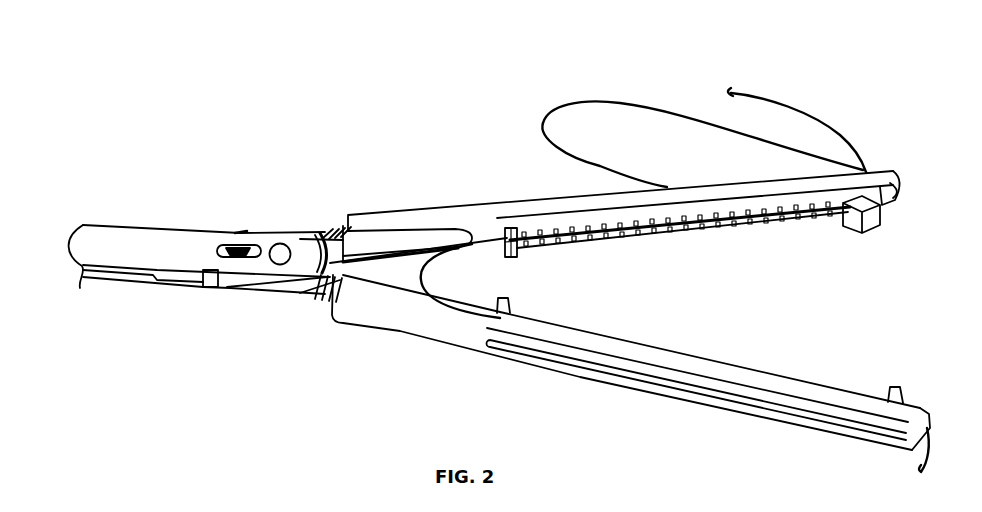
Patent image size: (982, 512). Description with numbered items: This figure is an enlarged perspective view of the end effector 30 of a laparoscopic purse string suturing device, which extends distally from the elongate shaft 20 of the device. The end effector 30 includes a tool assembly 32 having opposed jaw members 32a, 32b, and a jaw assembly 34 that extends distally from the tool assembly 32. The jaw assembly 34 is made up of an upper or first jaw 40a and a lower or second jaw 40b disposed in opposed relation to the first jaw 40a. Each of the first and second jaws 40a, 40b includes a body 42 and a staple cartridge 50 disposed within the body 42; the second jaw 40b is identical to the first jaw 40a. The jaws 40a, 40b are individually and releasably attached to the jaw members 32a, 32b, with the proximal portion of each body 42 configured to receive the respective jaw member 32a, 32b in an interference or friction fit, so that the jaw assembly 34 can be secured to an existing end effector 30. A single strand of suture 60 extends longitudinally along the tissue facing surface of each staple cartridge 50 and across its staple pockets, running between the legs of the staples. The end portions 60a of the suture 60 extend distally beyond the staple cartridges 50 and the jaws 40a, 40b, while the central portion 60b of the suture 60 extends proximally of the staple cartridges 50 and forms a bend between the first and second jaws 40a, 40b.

The shaft 20 is at (112, 278).
The end effector 30 is at (370, 178).
The tool assembly 32 is at (233, 224).
The jaw member 32a is at (338, 226).
The jaw member 32b is at (321, 278).
The jaw assembly 34 is at (474, 358).
The first jaw 40a is at (448, 188).
The second jaw 40b is at (689, 403).
The body 42 is at (530, 207).
The staple cartridge 50 is at (727, 222).
The suture 60 is at (866, 120).
The end portions 60a is at (664, 109).
The central portion 60b is at (421, 291).